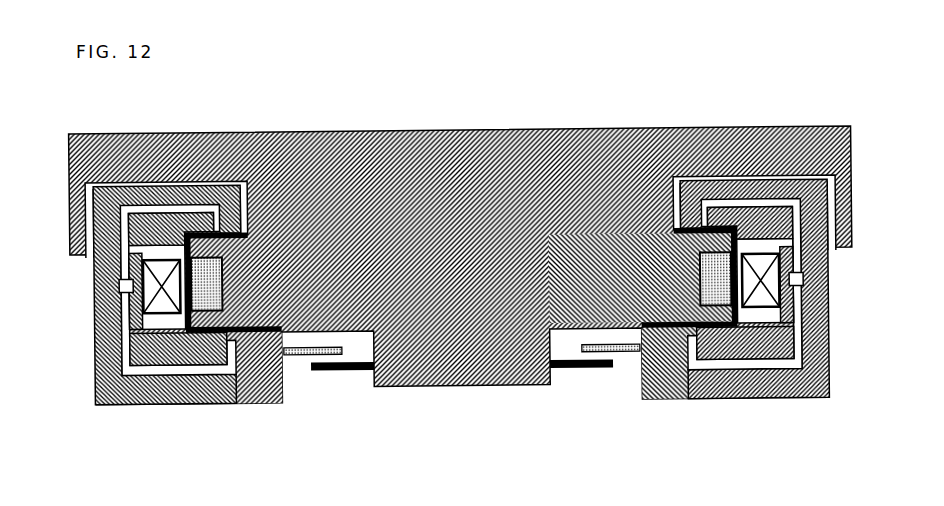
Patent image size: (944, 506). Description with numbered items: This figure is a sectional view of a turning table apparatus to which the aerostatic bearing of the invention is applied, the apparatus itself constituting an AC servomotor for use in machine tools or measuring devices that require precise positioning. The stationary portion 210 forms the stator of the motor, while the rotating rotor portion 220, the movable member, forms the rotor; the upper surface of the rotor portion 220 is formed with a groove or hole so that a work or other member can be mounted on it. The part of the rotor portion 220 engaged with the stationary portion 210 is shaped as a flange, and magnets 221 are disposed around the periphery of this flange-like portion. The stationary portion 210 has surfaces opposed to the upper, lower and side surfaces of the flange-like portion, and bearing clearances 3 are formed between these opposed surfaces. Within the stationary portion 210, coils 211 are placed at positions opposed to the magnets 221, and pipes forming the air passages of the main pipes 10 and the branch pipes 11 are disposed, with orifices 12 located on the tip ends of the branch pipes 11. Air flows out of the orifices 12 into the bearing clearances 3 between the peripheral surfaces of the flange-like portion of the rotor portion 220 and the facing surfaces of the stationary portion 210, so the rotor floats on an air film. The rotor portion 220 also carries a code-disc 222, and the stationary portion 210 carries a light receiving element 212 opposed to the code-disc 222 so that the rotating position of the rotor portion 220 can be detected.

The bearing clearances 3 is at (686, 224).
The main pipes 10 is at (111, 276).
The branch pipes 11 is at (148, 198).
The orifices 12 is at (177, 236).
The stationary portion 210 is at (785, 388).
The coils 211 is at (119, 253).
The light receiving element 212 is at (294, 348).
The rotor portion 220 is at (632, 127).
The magnets 221 is at (690, 246).
The code-disc 222 is at (342, 364).